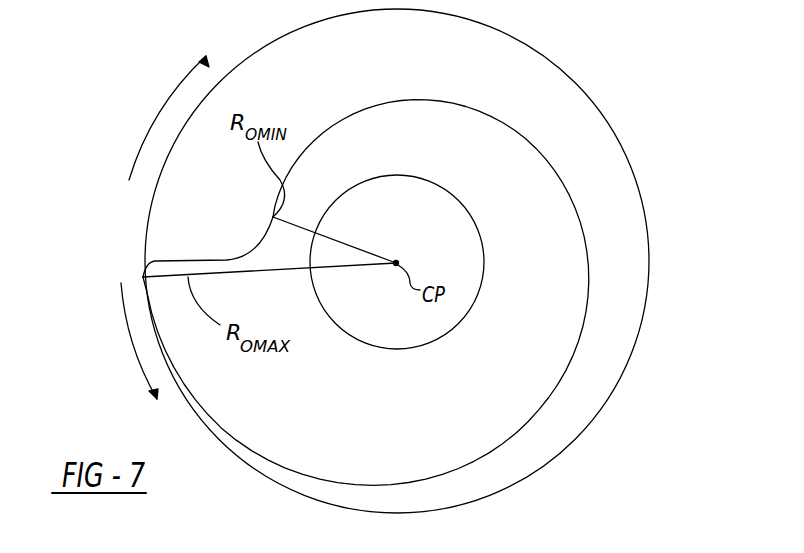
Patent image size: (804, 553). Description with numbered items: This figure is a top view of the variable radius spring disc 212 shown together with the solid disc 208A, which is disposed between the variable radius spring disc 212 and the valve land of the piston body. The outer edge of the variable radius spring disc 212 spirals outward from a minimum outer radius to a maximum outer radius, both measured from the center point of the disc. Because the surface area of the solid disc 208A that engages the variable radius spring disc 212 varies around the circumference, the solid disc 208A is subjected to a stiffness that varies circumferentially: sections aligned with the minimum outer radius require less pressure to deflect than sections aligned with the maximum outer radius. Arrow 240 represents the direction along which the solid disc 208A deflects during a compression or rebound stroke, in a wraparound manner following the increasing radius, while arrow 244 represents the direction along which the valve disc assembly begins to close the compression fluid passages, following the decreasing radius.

The solid disc 208A is at (610, 123).
The variable radius spring disc 212 is at (586, 320).
The arrow 240 is at (143, 138).
The arrow 244 is at (130, 340).